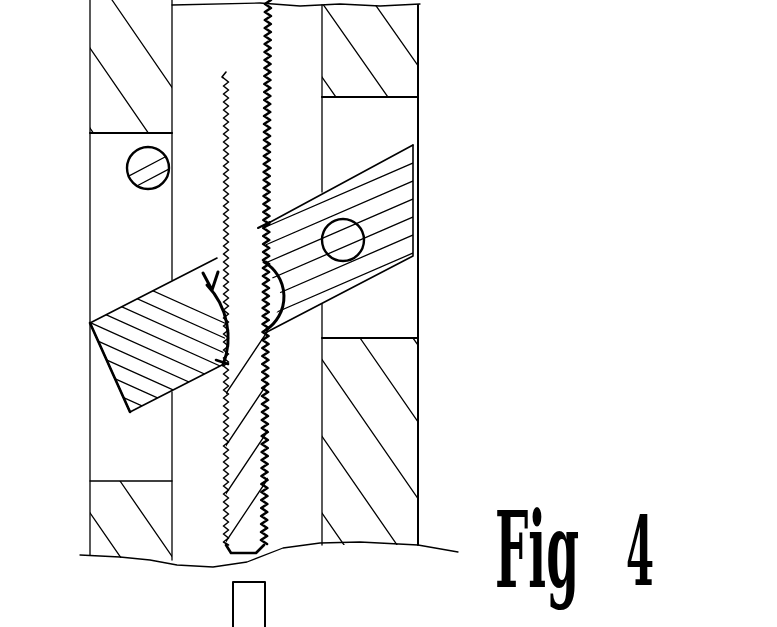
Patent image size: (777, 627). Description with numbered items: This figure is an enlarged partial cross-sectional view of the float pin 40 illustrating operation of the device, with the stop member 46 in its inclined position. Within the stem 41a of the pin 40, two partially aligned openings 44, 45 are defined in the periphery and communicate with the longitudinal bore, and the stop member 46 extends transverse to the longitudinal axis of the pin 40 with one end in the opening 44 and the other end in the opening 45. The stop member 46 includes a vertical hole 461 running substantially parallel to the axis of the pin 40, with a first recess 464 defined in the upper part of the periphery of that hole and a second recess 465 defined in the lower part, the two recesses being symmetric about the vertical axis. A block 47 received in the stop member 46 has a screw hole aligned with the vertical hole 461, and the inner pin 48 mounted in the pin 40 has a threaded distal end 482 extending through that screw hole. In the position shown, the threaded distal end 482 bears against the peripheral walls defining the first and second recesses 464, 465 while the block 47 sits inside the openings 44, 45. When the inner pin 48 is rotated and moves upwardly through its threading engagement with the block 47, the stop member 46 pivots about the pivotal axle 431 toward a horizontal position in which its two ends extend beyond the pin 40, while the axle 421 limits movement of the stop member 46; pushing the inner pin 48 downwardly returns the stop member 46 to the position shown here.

The float pin 40 is at (403, 458).
The stem 41a is at (420, 33).
The axle 421 is at (127, 166).
The pivotal axle 431 is at (365, 250).
The opening 44 is at (408, 323).
The opening 45 is at (102, 447).
The stop member 46 is at (397, 203).
The vertical hole 461 is at (210, 284).
The first recess 464 is at (263, 226).
The second recess 465 is at (224, 364).
The block 47 is at (210, 297).
The inner pin 48 is at (270, 46).
The threaded distal end 482 is at (268, 447).